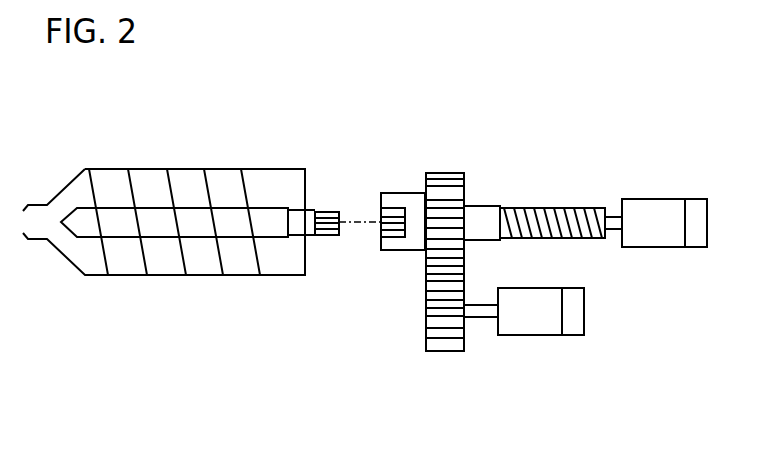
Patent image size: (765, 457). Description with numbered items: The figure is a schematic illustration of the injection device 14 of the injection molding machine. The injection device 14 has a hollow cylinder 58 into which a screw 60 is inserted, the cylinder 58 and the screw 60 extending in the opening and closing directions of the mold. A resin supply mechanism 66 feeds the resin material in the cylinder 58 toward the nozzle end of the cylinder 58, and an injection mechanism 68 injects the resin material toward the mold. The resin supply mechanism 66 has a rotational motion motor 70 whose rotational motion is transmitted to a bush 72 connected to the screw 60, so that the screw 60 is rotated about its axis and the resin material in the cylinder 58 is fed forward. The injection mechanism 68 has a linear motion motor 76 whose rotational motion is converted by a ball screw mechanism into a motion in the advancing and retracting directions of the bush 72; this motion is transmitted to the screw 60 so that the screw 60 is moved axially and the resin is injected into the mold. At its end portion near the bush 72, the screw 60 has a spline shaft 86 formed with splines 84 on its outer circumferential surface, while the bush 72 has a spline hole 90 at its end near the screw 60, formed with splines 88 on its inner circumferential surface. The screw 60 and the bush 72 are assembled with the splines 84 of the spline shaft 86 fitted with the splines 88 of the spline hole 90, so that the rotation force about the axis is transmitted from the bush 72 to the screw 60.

The injection device 14 is at (360, 158).
The cylinder 58 is at (180, 169).
The screw 60 is at (164, 240).
The resin supply mechanism 66 is at (466, 361).
The injection mechanism 68 is at (550, 181).
The rotational motion motor 70 is at (572, 312).
The bush 72 is at (412, 200).
The linear motion motor 76 is at (652, 210).
The splines 84 is at (328, 214).
The spline shaft 86 is at (320, 208).
The splines 88 is at (393, 233).
The spline hole 90 is at (386, 210).